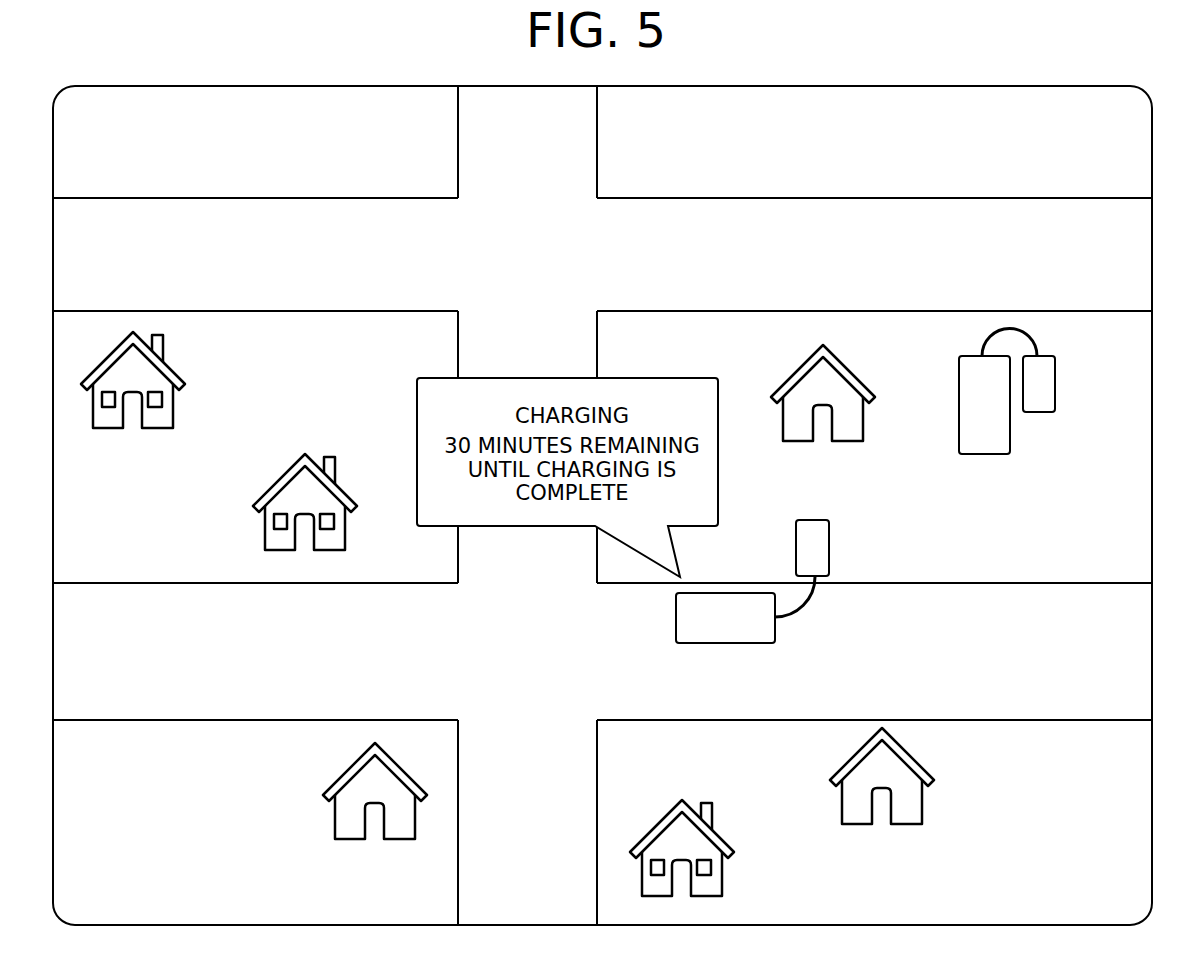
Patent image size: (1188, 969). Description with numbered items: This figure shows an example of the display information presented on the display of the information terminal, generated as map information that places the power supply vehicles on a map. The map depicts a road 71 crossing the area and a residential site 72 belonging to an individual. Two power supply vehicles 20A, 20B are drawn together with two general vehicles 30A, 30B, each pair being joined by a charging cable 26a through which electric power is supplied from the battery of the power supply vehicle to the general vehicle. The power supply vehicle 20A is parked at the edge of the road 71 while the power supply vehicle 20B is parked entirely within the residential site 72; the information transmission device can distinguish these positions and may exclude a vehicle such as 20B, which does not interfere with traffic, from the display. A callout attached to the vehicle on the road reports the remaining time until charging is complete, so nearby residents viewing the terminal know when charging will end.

The road 71 is at (616, 270).
The residential site 72 is at (1089, 365).
The power supply vehicle 20A is at (676, 625).
The power supply vehicle 20B is at (959, 392).
The general vehicle 30A is at (829, 542).
The general vehicle 30B is at (1040, 413).
The charging cable 26a is at (805, 607).